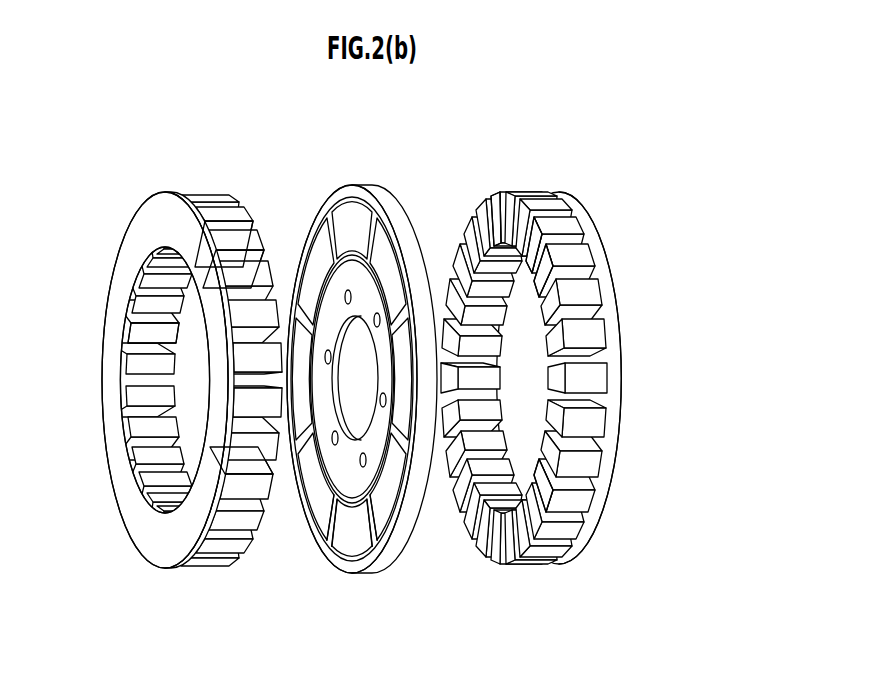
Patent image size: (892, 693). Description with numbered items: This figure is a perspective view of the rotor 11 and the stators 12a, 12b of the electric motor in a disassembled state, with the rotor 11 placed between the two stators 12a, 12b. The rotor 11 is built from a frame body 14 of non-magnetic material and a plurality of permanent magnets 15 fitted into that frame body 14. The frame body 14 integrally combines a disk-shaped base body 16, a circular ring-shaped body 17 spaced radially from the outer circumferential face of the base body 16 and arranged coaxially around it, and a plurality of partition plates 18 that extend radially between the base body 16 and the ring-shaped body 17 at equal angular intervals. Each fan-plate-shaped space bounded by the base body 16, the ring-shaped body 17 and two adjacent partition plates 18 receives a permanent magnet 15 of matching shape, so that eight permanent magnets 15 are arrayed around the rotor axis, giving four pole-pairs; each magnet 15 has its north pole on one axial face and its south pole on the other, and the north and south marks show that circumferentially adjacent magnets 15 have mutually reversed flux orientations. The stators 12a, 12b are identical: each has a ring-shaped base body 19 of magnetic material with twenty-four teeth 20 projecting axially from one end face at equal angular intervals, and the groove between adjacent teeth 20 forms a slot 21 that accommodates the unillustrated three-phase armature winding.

The rotor 11 is at (398, 184).
The stator 12a is at (163, 192).
The stator 12b is at (592, 212).
The frame body 14 is at (344, 575).
The permanent magnet 15 is at (352, 203).
The base body 16 is at (347, 481).
The ring-shaped body 17 is at (413, 507).
The partition plate 18 is at (324, 530).
The base body 19 is at (140, 533).
The tooth 20 is at (243, 218).
The slot 21 is at (150, 333).